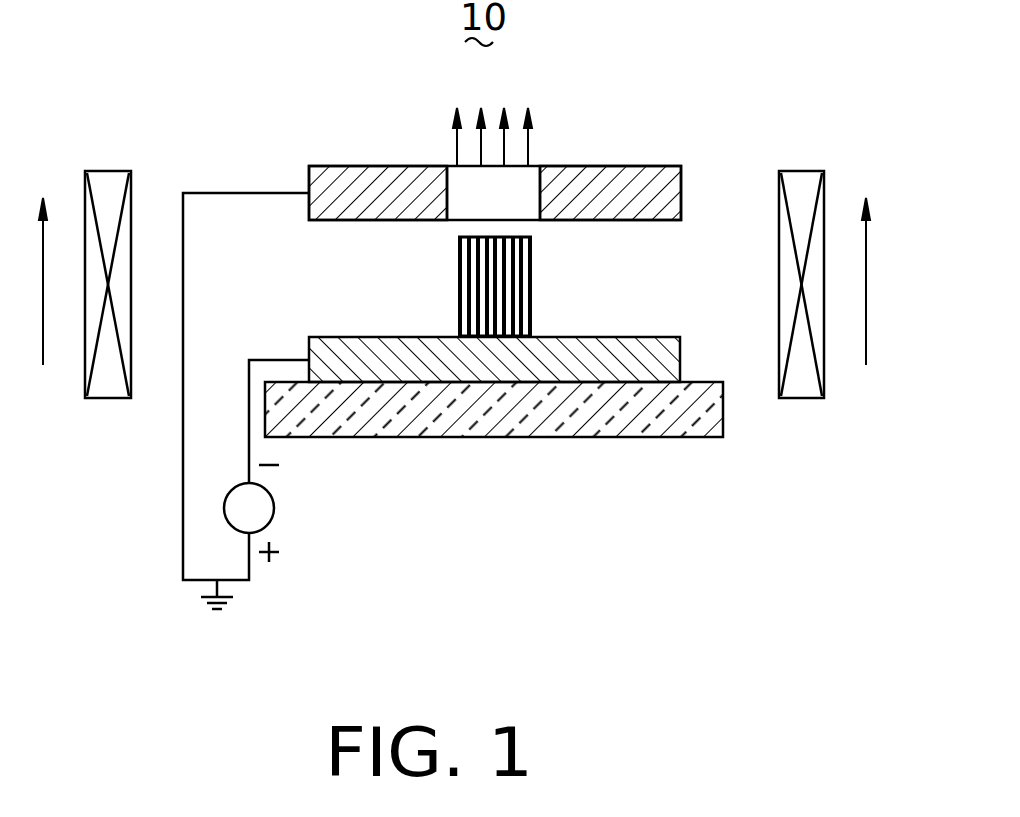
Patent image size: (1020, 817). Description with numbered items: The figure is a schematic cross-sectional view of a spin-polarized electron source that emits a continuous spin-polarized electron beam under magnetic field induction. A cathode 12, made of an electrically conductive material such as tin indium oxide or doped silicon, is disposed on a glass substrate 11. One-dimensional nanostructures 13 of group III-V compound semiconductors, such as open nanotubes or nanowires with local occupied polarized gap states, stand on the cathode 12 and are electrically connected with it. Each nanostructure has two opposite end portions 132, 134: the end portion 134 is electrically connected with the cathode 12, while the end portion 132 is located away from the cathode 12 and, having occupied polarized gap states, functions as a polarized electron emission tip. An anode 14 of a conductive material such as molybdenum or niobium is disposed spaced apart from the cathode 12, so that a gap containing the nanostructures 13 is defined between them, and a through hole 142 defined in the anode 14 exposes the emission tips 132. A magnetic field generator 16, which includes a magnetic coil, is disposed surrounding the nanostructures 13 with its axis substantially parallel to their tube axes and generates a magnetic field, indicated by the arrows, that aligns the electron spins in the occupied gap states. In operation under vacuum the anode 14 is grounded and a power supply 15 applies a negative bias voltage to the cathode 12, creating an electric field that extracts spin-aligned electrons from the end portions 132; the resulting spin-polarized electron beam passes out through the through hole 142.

The glass substrate 11 is at (622, 428).
The cathode 12 is at (610, 340).
The one-dimensional nanostructures 13 is at (531, 265).
The end portion 132 is at (458, 243).
The end portion 134 is at (458, 334).
The anode 14 is at (635, 172).
The through hole 142 is at (527, 190).
The power supply 15 is at (265, 505).
The magnetic field generator 16 is at (808, 177).